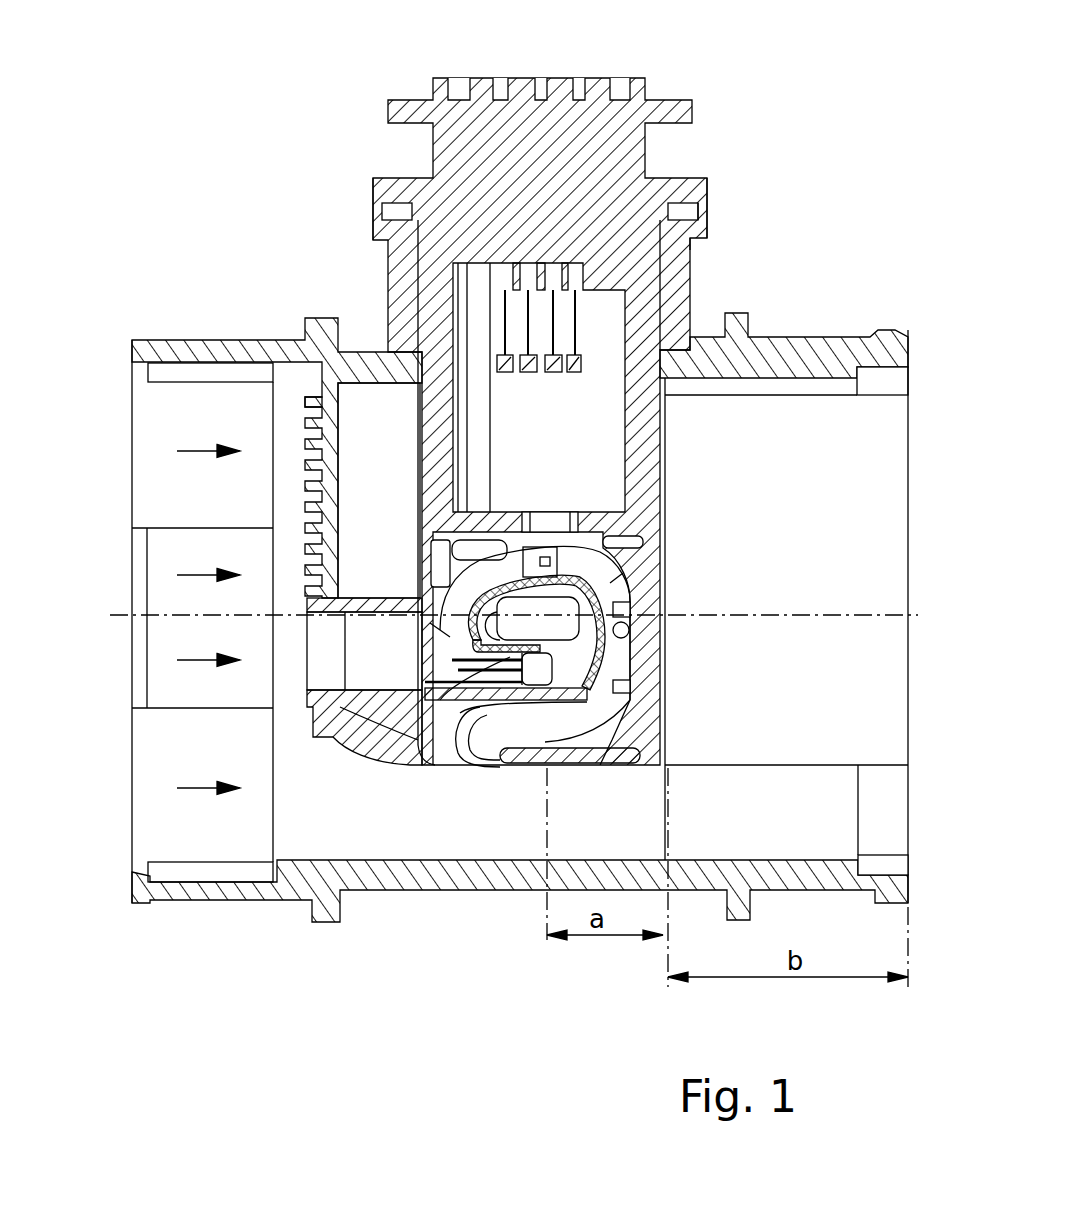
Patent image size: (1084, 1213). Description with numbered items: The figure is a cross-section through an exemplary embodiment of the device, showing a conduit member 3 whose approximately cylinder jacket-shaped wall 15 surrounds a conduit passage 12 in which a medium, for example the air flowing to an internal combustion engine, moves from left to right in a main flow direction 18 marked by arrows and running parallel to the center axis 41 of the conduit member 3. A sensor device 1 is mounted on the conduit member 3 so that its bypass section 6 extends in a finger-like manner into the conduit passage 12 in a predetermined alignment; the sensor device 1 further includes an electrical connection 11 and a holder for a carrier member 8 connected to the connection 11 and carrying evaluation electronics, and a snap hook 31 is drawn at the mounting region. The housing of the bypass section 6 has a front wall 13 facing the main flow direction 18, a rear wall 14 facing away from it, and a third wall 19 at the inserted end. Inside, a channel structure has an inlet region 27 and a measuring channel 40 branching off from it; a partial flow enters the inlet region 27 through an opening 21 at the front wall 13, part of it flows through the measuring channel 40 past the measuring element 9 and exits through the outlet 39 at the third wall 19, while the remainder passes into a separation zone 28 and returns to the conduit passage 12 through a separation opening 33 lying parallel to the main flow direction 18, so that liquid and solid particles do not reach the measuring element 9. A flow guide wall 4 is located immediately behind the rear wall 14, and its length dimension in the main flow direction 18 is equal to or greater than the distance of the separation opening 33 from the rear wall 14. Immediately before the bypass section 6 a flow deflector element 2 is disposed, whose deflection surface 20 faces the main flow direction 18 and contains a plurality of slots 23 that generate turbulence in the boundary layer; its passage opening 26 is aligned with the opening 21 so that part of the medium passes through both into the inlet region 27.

The sensor device 1 is at (437, 293).
The flow deflector element 2 is at (332, 470).
The conduit member 3 is at (781, 284).
The flow guide wall 4 is at (775, 478).
The bypass section 6 is at (640, 512).
The carrier member 8 is at (477, 290).
The measuring element 9 is at (640, 548).
The electrical connection 11 is at (615, 78).
The conduit passage 12 is at (755, 820).
The front wall 13 is at (420, 432).
The rear wall 14 is at (660, 678).
The wall 15 is at (838, 352).
The main flow direction 18 is at (178, 450).
The third wall 19 is at (512, 760).
The deflection surface 20 is at (307, 443).
The opening 21 is at (416, 645).
The slots 23 is at (305, 535).
The passage opening 26 is at (347, 668).
The inlet region 27 is at (372, 702).
The separation zone 28 is at (432, 735).
The snap hook 31 is at (681, 248).
The separation opening 33 is at (600, 668).
The outlet 39 is at (482, 762).
The measuring channel 40 is at (610, 580).
The center axis 41 is at (916, 630).